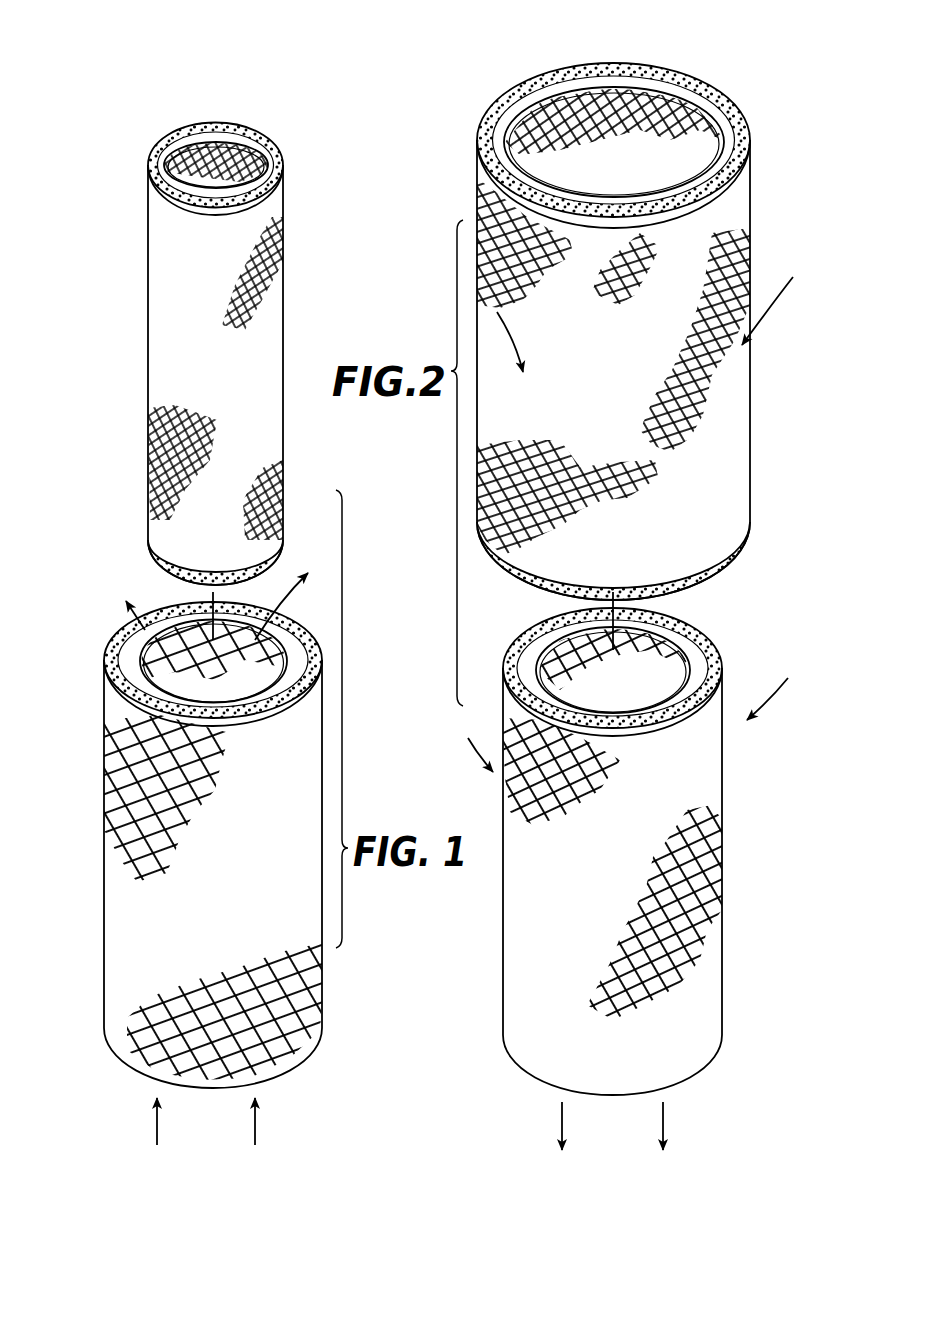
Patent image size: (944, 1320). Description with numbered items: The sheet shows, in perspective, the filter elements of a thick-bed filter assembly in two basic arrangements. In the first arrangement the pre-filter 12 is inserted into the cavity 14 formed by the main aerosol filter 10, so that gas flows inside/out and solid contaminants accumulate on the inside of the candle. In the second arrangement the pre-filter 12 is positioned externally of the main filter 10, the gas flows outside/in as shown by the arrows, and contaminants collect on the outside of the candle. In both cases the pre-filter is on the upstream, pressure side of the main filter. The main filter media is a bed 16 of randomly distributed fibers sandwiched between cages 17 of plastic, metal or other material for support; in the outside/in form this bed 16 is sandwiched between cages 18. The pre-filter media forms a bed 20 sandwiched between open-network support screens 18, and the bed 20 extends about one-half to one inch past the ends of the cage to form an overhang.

In FIG. 1, the main aerosol filter 10 is at (95, 908).
In FIG. 2, the main aerosol filter 10 is at (493, 972).
In FIG. 1, the pre-filter 12 is at (133, 356).
In FIG. 2, the pre-filter 12 is at (768, 148).
In FIG. 1, the cavity 14 is at (258, 684).
In FIG. 1, the bed of randomly distributed fibers 16 is at (122, 648).
In FIG. 2, the bed of randomly distributed fibers 16 is at (707, 660).
In FIG. 1, the cages 17 is at (178, 700).
In FIG. 2, the cages 17 is at (640, 673).
In FIG. 1, the support screens 18 is at (218, 143).
In FIG. 2, the support screens 18 is at (663, 88).
In FIG. 1, the pre-filter bed 20 is at (260, 136).
In FIG. 2, the pre-filter bed 20 is at (575, 63).